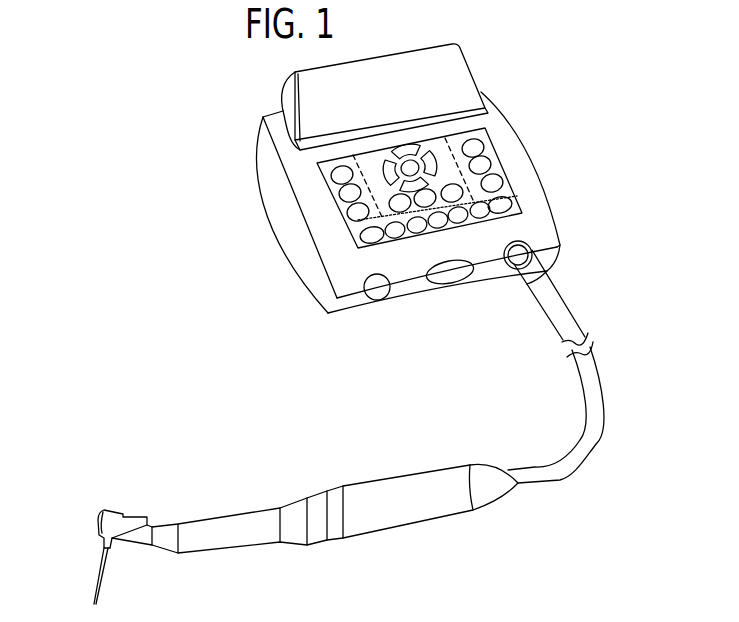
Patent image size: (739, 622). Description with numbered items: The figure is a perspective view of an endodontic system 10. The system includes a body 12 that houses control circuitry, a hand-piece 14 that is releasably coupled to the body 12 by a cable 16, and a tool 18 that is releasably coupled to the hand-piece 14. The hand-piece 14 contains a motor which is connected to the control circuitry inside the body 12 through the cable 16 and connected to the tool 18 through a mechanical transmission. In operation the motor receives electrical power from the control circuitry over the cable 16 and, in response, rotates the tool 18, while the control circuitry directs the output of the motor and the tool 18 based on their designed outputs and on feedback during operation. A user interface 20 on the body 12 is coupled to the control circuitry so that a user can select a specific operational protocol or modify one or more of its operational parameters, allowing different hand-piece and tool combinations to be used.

The endodontic system 10 is at (126, 355).
The body 12 is at (265, 155).
The hand-piece 14 is at (445, 467).
The cable 16 is at (552, 308).
The tool 18 is at (100, 562).
The user interface 20 is at (444, 56).